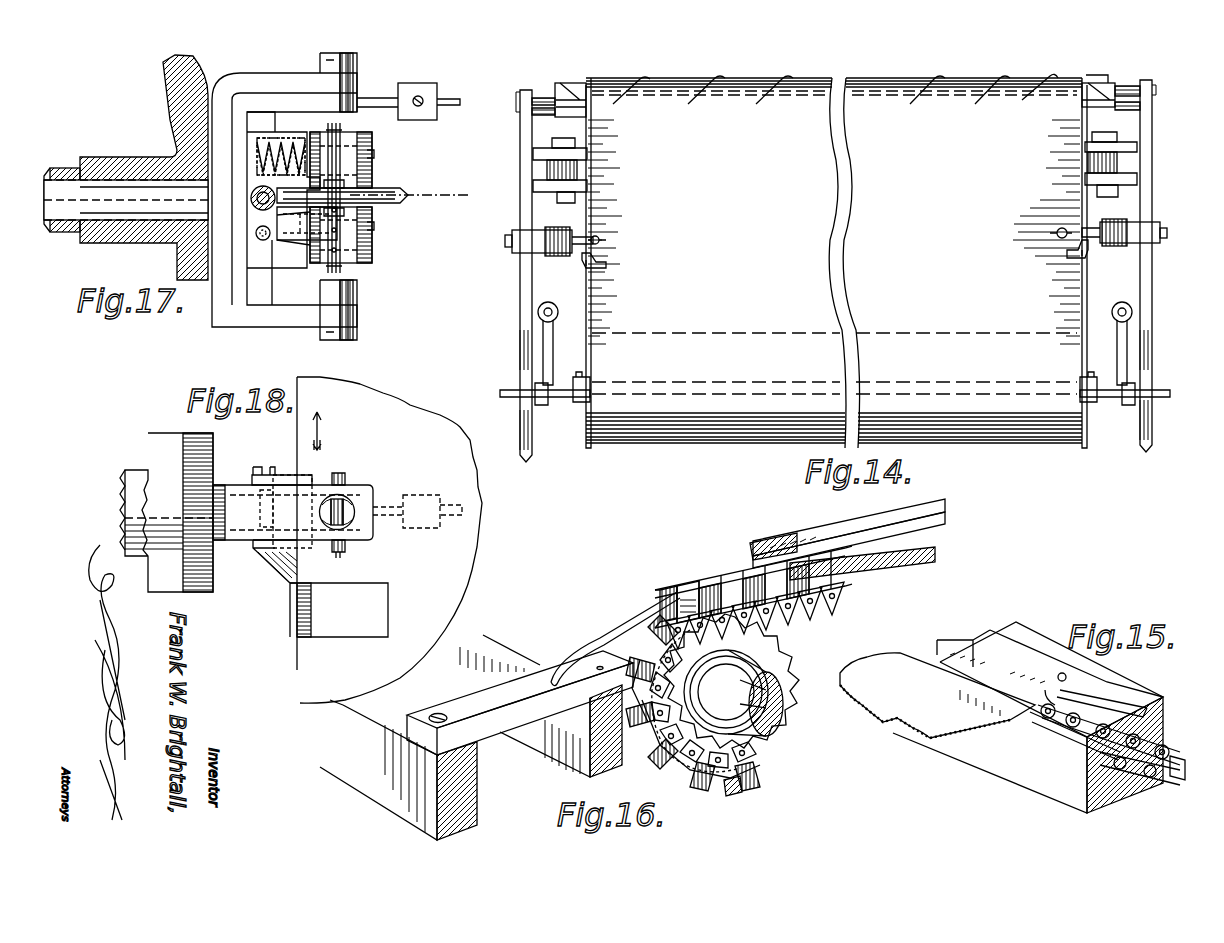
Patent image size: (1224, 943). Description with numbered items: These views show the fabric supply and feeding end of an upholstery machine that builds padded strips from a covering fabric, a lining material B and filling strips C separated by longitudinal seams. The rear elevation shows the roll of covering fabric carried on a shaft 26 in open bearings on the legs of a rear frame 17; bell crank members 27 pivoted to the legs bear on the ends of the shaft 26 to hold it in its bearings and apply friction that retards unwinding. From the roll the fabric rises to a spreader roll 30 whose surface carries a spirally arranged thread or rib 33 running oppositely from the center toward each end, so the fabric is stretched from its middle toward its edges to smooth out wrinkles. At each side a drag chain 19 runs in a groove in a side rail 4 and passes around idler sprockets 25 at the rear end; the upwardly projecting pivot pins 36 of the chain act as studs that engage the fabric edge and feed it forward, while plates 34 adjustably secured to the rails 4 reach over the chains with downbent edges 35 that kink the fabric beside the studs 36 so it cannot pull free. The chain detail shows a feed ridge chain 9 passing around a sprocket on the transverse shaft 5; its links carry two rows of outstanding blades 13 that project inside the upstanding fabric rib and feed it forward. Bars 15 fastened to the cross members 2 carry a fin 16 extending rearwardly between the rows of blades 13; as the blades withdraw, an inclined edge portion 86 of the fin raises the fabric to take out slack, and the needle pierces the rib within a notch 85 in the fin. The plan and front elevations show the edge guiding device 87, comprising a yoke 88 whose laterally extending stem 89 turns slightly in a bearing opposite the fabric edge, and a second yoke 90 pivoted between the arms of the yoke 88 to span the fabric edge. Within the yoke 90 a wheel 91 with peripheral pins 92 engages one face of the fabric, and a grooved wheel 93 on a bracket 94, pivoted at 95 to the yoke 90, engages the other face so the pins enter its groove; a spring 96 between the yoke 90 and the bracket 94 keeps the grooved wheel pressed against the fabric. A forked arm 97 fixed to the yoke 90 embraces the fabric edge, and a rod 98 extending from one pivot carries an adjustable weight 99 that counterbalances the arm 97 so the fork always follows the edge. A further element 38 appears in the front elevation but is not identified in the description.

In FIG. 16, the cross members 2 is at (390, 800).
In FIG. 15, the grooved side rails 4 is at (1005, 775).
In FIG. 16, the transverse shaft 5 is at (775, 714).
In FIG. 16, the feed ridge chains 9 is at (800, 618).
In FIG. 16, the blades 13 is at (754, 566).
In FIG. 16, the bars 15 is at (495, 740).
In FIG. 16, the blade or fin 16 is at (590, 652).
In FIG. 14, the frame 17 is at (520, 299).
In FIG. 14, the drag chain 19 is at (547, 165).
In FIG. 15, the drag chain 19 is at (1152, 790).
In FIG. 14, the idler sprockets 25 is at (545, 146).
In FIG. 14, the shaft 26 is at (562, 400).
In FIG. 14, the bell crank members 27 is at (554, 340).
In FIG. 14, the spreader roll 30 is at (1120, 85).
In FIG. 14, the spirally arranged thread or rib 33 is at (1096, 78).
In FIG. 15, the plates 34 is at (1012, 660).
In FIG. 15, the downbent edges 35 is at (1046, 690).
In FIG. 15, the pivot pins 36 is at (1065, 730).
In FIG. 18, the body 38 is at (154, 512).
In FIG. 16, the notch or undercut 85 is at (662, 596).
In FIG. 16, the inclined edge portion 86 is at (700, 585).
In FIG. 17, the fabric edge holding and guiding device 87 is at (343, 235).
In FIG. 14, the fabric edge holding and guiding device 87 is at (574, 253).
In FIG. 17, the yoke 88 is at (230, 313).
In FIG. 14, the yoke 88 is at (572, 230).
In FIG. 18, the yoke 88 is at (240, 530).
In FIG. 17, the stem 89 is at (126, 167).
In FIG. 17, the second yoke 90 is at (260, 108).
In FIG. 17, the wheel 91 is at (342, 268).
In FIG. 18, the wheel 91 is at (347, 482).
In FIG. 17, the pins 92 is at (326, 268).
In FIG. 18, the pins 92 is at (339, 473).
In FIG. 17, the grooved wheel 93 is at (340, 122).
In FIG. 17, the bracket 94 is at (282, 137).
In FIG. 18, the bracket 94 is at (283, 475).
In FIG. 17, the pivot 95 is at (255, 208).
In FIG. 18, the pivot 95 is at (265, 463).
In FIG. 17, the spring 96 is at (257, 157).
In FIG. 17, the forked arm 97 is at (390, 190).
In FIG. 14, the forked arm 97 is at (588, 266).
In FIG. 18, the forked arm 97 is at (282, 565).
In FIG. 17, the rod 98 is at (378, 98).
In FIG. 18, the rod 98 is at (387, 506).
In FIG. 17, the adjustable weight 99 is at (420, 92).
In FIG. 14, the adjustable weight 99 is at (604, 236).
In FIG. 18, the adjustable weight 99 is at (424, 495).
In FIG. 16, the inner or lining material B is at (847, 533).
In FIG. 16, the strips of filling or stuffing material C is at (905, 582).